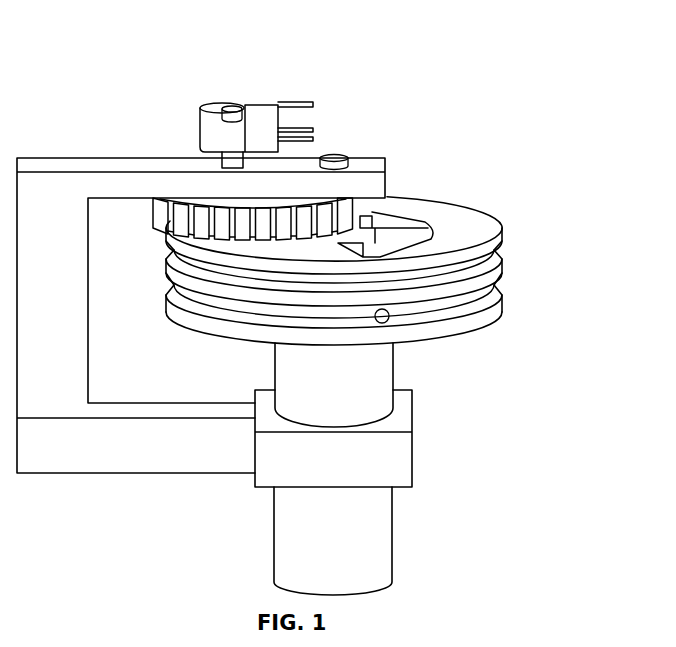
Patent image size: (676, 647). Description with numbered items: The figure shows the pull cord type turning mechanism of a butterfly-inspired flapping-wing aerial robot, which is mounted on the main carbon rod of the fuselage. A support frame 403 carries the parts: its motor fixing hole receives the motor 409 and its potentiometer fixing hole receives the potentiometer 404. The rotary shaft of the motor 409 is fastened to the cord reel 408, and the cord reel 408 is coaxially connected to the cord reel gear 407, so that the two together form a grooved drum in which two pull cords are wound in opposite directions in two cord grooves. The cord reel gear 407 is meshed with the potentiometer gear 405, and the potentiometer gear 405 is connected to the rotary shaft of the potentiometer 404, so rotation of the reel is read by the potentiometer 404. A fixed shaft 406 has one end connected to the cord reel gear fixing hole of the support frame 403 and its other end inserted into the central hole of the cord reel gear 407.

The support frame 403 is at (60, 220).
The potentiometer 404 is at (215, 127).
The potentiometer gear 405 is at (245, 212).
The fixed shaft 406 is at (334, 157).
The cord reel gear 407 is at (351, 205).
The cord reel 408 is at (377, 265).
The motor 409 is at (353, 400).